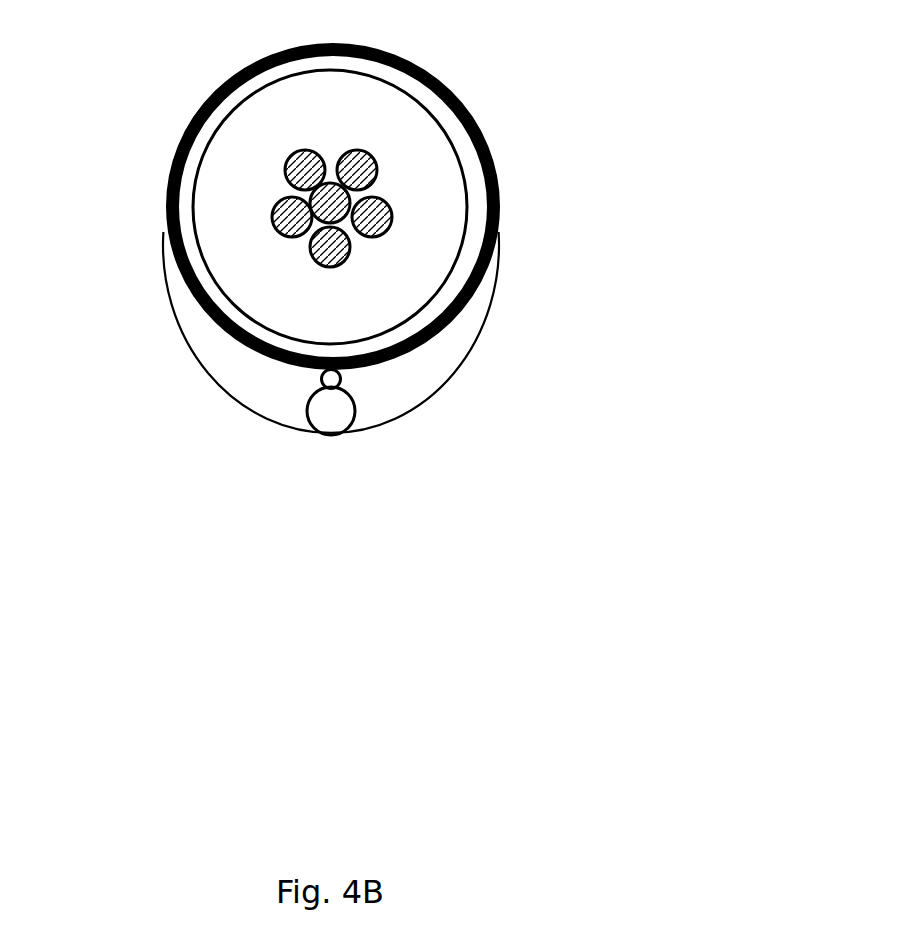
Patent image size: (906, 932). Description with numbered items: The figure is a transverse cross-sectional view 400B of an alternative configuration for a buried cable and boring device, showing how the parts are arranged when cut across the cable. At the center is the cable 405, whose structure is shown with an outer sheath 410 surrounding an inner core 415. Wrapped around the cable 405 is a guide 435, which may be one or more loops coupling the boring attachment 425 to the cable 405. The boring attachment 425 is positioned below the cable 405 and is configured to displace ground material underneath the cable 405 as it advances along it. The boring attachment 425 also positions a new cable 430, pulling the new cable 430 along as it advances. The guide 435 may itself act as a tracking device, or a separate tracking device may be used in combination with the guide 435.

The transverse cross-sectional view 400B is at (430, 353).
The cable 405 is at (133, 40).
The outer sheath 410 is at (470, 117).
The core 415 is at (385, 183).
The boring attachment 425 is at (355, 410).
The new cable 430 is at (343, 380).
The guide 435 is at (425, 63).